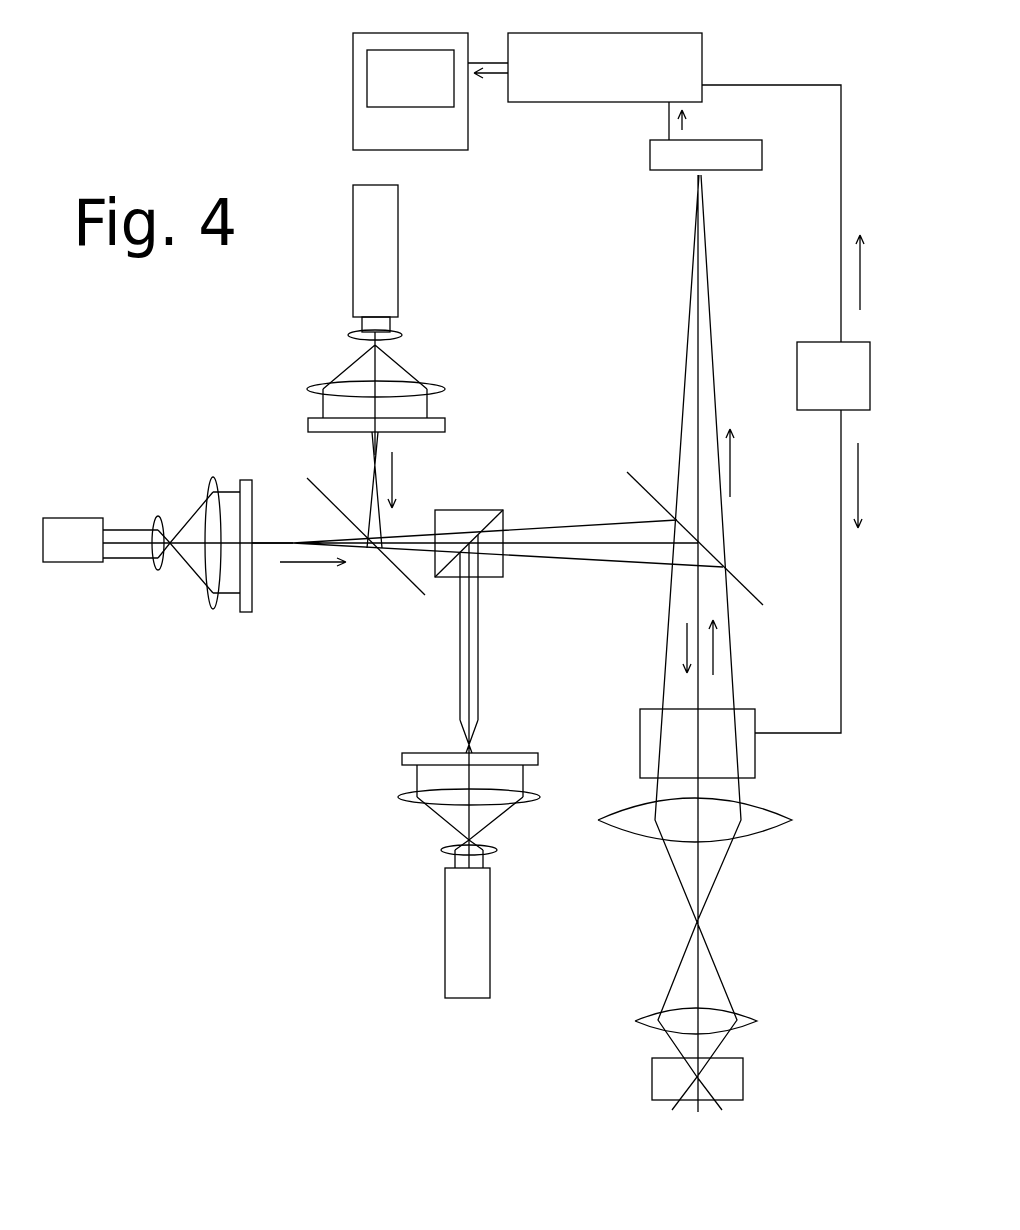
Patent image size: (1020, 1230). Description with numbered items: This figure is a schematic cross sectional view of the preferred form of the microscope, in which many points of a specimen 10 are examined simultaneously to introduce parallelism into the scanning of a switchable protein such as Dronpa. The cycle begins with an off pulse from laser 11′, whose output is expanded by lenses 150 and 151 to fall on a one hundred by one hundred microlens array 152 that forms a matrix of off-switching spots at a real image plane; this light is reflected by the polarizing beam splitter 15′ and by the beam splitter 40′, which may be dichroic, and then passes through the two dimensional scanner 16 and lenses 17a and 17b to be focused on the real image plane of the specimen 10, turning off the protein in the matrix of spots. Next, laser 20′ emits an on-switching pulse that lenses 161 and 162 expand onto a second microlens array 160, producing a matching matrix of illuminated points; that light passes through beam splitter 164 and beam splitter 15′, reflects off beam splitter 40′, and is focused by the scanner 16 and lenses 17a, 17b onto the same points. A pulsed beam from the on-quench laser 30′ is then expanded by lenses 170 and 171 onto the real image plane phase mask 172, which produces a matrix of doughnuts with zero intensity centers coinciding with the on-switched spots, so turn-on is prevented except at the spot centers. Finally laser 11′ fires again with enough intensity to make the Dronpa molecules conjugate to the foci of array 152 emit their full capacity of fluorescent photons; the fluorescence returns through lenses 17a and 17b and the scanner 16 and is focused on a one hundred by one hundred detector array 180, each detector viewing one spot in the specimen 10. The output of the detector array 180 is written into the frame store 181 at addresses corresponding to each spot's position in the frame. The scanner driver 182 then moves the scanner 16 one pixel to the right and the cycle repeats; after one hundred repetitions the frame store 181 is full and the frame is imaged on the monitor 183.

The specimen 10 is at (743, 1068).
The laser 11′ is at (490, 895).
The polarizing beam splitter 15′ is at (482, 510).
The two dimensional scanner 16 is at (745, 709).
The lens 17a is at (775, 810).
The lens 17b is at (750, 1018).
The laser 20′ is at (58, 518).
The on-quench laser 30′ is at (398, 288).
The beam splitter 40′ is at (742, 585).
The lens 150 is at (497, 850).
The lens 151 is at (540, 797).
The microlens array 152 is at (538, 760).
The microlens array 160 is at (243, 612).
The lens 161 is at (155, 515).
The lens 162 is at (212, 478).
The beam splitter 164 is at (398, 578).
The lens 170 is at (405, 334).
The lens 171 is at (445, 389).
The phase mask 172 is at (445, 425).
The detector array 180 is at (748, 138).
The frame store 181 is at (702, 73).
The scanner driver 182 is at (830, 342).
The monitor 183 is at (353, 50).